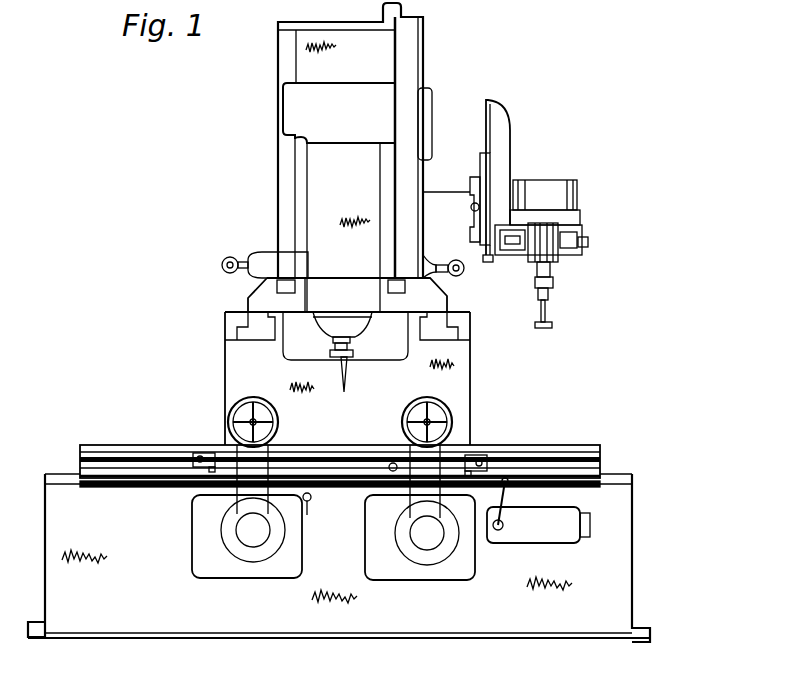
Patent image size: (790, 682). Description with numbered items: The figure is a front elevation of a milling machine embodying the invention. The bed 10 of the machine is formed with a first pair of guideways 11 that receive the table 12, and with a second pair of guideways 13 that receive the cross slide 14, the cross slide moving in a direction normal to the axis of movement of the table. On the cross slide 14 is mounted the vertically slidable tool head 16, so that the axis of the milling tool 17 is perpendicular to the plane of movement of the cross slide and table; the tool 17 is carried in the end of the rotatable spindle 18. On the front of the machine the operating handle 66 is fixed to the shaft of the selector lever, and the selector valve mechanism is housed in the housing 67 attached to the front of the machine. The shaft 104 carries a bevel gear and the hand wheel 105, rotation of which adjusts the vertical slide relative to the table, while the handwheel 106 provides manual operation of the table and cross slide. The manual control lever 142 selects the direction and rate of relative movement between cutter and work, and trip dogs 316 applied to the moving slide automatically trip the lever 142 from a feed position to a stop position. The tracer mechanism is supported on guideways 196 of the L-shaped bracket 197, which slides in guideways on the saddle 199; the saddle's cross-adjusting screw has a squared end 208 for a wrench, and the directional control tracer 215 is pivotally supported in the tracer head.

The bed 10 is at (634, 508).
The first pair of guideways 11 is at (616, 475).
The table 12 is at (582, 450).
The second pair of guideways 13 is at (237, 339).
The cross slide 14 is at (282, 200).
The tool head 16 is at (312, 169).
The milling tool 17 is at (346, 381).
The spindle 18 is at (356, 345).
The operating handle 66 is at (507, 495).
The housing 67 is at (535, 538).
The shaft 104 is at (441, 283).
The hand wheel 105 is at (464, 279).
The handwheel 106 is at (453, 419).
The manual control lever 142 is at (393, 462).
The guideways 196 is at (570, 252).
The L-shaped bracket 197 is at (505, 150).
The saddle 199 is at (480, 156).
The squared end 208 is at (471, 205).
The tracer 215 is at (548, 316).
The trip dogs 316 is at (211, 452).